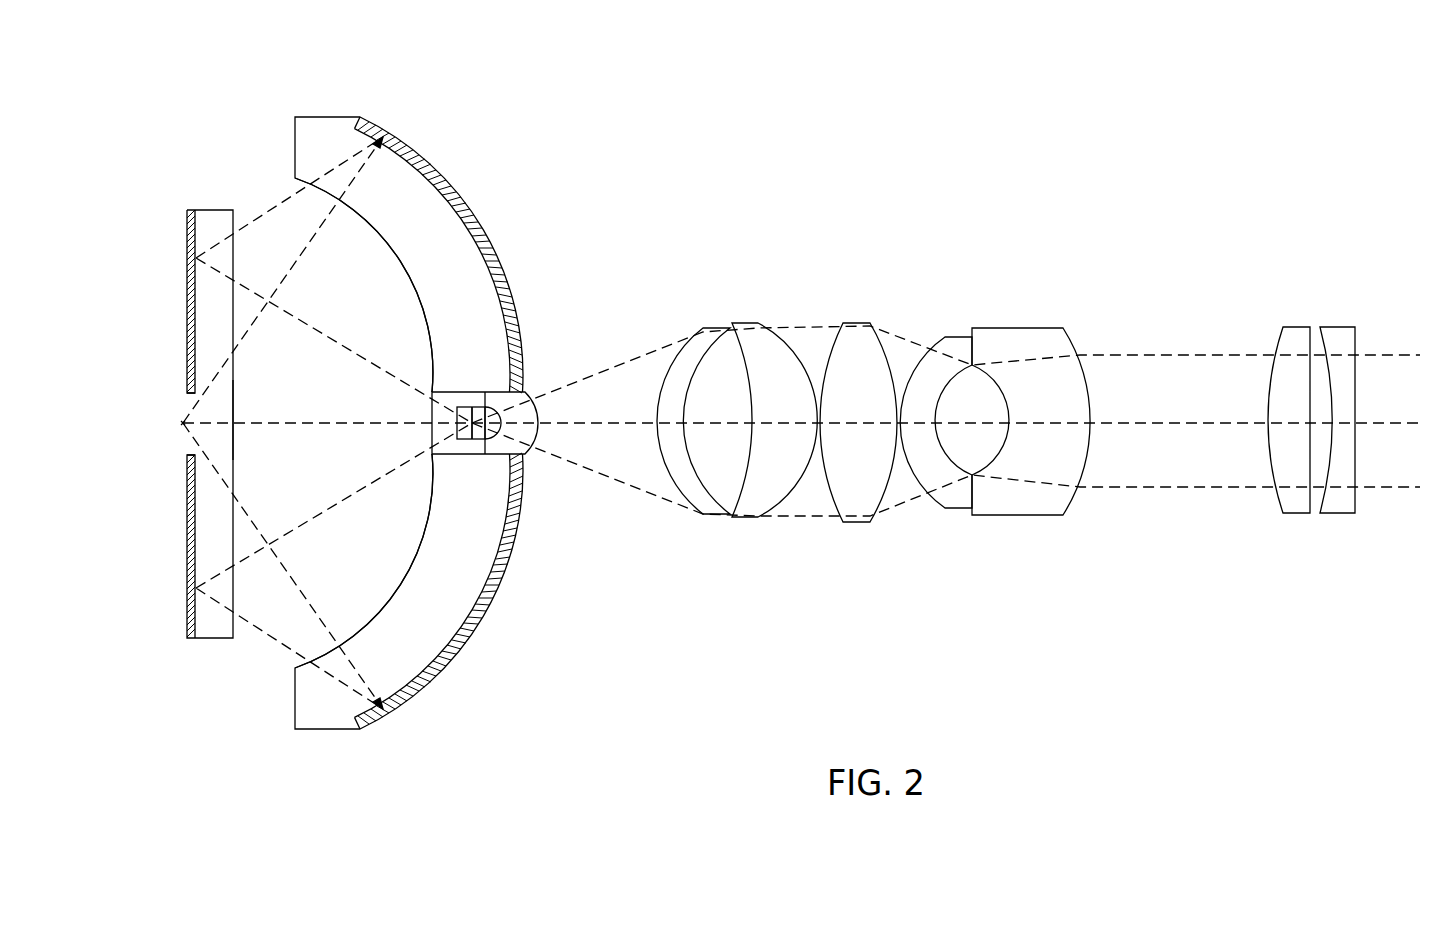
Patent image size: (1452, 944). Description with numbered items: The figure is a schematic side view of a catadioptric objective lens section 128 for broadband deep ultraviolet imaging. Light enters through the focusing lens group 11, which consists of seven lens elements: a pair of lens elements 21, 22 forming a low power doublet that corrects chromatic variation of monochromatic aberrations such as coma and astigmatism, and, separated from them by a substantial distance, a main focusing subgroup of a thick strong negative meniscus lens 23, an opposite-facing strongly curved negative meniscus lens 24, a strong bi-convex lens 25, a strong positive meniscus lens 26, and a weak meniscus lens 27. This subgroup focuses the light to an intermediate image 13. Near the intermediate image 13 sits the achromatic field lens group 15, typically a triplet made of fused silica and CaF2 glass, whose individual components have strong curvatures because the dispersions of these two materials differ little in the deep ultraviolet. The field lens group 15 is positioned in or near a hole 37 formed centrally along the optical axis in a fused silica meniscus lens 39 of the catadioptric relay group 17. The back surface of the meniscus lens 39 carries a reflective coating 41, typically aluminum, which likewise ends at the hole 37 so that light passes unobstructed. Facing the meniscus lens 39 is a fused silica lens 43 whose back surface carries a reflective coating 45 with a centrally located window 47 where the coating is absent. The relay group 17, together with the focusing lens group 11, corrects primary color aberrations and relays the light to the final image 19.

The focusing lens group 11 is at (620, 207).
The intermediate image 13 is at (470, 409).
The field lens group 15 is at (435, 480).
The catadioptric relay group 17 is at (178, 102).
The final image 19 is at (182, 426).
The lens element 21 is at (1337, 327).
The lens element 22 is at (1295, 327).
The thick strong negative meniscus lens 23 is at (1018, 330).
The negative meniscus lens 24 is at (962, 510).
The bi-convex lens 25 is at (857, 323).
The positive meniscus lens 26 is at (747, 518).
The meniscus lens 27 is at (718, 328).
The hole 37 is at (440, 418).
The meniscus lens 39 is at (422, 268).
The coating 41 is at (454, 188).
The lens 43 is at (235, 406).
The reflective coating 45 is at (187, 280).
The window 47 is at (180, 405).
The catadioptric objective lens section 128 is at (1010, 673).
The CaF2 glass CaF2 is at (478, 393).